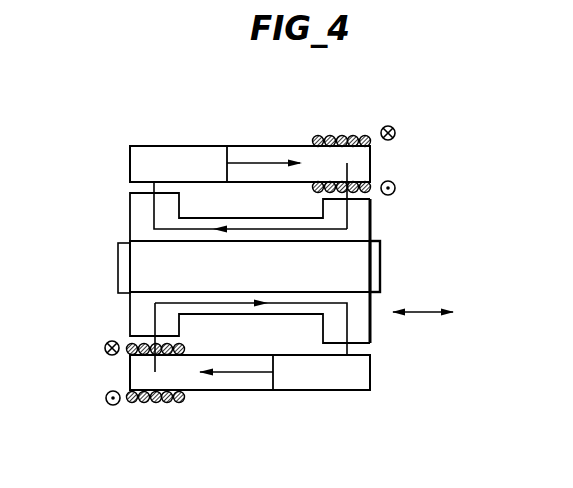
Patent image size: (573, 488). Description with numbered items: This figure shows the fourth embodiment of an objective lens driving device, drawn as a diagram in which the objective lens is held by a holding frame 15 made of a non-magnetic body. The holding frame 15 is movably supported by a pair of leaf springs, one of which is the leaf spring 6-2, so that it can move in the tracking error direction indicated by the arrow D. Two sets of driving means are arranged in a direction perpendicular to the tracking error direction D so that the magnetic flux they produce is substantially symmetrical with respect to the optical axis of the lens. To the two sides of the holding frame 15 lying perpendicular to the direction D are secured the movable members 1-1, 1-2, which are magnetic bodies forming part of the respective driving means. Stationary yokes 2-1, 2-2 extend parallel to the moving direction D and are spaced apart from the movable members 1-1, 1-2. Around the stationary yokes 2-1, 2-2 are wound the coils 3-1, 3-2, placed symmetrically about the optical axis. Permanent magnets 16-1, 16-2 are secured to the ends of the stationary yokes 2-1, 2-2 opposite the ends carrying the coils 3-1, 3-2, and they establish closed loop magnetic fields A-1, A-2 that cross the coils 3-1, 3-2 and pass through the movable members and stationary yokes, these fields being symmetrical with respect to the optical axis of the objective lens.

The movable member 1-1 is at (370, 210).
The movable member 1-2 is at (370, 327).
The stationary yoke 2-1 is at (283, 147).
The stationary yoke 2-2 is at (267, 388).
The coil 3-1 is at (353, 140).
The coil 3-2 is at (167, 405).
The closed loop magnetic field A-1 is at (243, 162).
The closed loop magnetic field A-2 is at (217, 388).
The leaf spring 6-2 is at (118, 247).
The holding frame 15 is at (357, 257).
The permanent magnet 16-1 is at (378, 273).
The permanent magnet 16-2 is at (347, 389).
The tracking error direction D is at (427, 312).